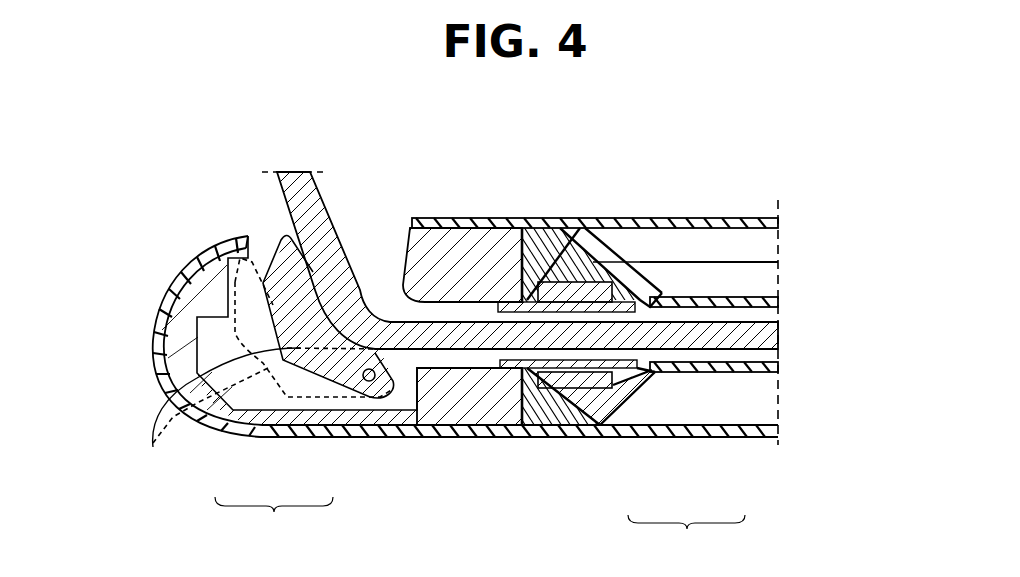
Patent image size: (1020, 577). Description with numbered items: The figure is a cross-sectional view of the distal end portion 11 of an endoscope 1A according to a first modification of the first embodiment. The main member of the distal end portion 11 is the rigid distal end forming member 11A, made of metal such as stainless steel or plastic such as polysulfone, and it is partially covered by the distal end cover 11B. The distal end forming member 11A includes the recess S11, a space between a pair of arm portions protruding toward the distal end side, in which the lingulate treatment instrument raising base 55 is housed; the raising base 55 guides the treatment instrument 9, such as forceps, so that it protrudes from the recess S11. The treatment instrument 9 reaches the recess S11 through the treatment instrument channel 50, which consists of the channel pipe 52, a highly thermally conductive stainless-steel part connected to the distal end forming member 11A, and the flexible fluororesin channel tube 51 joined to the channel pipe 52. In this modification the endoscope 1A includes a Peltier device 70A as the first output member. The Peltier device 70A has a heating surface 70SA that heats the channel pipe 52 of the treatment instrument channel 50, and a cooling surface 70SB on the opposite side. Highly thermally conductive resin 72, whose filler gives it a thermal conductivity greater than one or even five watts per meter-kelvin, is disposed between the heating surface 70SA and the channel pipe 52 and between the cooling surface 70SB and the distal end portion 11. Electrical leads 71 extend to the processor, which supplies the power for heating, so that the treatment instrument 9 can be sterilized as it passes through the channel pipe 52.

The endoscope 1A is at (126, 187).
The treatment instrument 9 is at (326, 197).
The recess S11 is at (363, 226).
The distal end portion 11 is at (274, 522).
The distal end forming member 11A is at (266, 432).
The distal end cover 11B is at (334, 433).
The treatment instrument raising base 55 is at (150, 449).
The cooling surface 70SB is at (553, 284).
The heating surface 70SA is at (552, 312).
The Peltier device 70A is at (569, 278).
The electrical leads 71 is at (682, 261).
The highly thermally conductive resin 72 is at (641, 246).
The treatment instrument channel 50 is at (686, 539).
The channel tube 51 is at (684, 373).
The channel pipe 52 is at (613, 421).